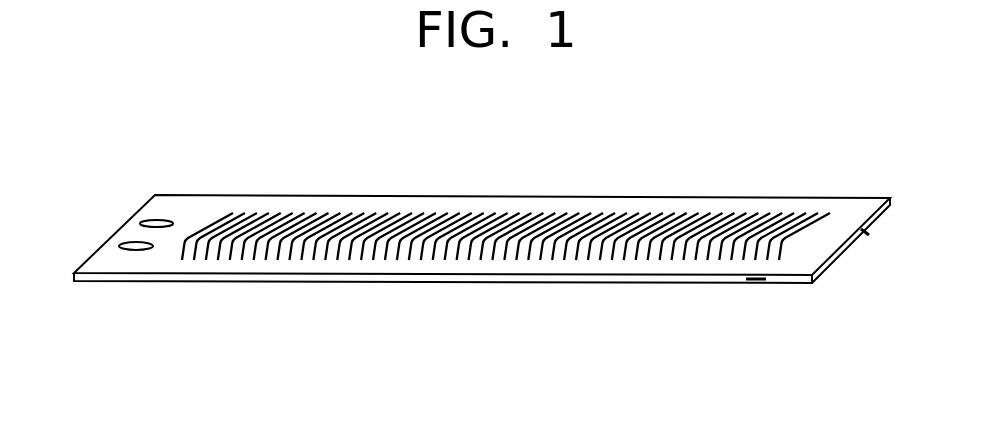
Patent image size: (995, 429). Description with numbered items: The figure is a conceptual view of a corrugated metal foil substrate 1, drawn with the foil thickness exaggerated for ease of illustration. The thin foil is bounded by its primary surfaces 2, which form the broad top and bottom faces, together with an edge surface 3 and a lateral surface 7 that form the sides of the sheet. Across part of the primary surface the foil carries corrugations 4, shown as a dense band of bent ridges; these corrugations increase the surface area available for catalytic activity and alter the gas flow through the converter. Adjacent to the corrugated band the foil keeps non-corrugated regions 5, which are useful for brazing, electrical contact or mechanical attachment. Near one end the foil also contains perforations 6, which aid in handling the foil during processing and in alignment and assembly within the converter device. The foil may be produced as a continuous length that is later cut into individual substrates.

The metal foil substrate 1 is at (455, 229).
The primary surfaces 2 is at (817, 197).
The edge surface 3 is at (757, 279).
The corrugations 4 is at (282, 212).
The non-corrugated regions 5 is at (193, 212).
The perforations 6 is at (130, 244).
The lateral surface 7 is at (73, 276).